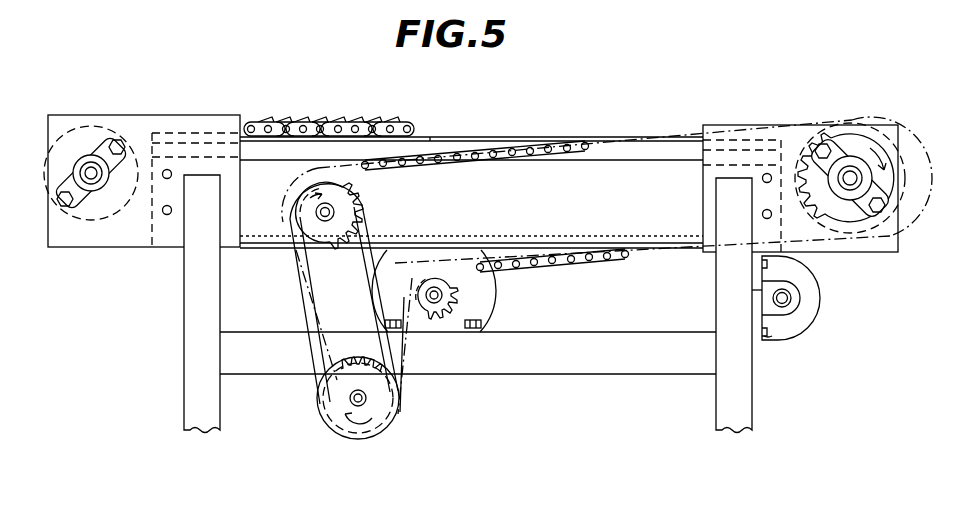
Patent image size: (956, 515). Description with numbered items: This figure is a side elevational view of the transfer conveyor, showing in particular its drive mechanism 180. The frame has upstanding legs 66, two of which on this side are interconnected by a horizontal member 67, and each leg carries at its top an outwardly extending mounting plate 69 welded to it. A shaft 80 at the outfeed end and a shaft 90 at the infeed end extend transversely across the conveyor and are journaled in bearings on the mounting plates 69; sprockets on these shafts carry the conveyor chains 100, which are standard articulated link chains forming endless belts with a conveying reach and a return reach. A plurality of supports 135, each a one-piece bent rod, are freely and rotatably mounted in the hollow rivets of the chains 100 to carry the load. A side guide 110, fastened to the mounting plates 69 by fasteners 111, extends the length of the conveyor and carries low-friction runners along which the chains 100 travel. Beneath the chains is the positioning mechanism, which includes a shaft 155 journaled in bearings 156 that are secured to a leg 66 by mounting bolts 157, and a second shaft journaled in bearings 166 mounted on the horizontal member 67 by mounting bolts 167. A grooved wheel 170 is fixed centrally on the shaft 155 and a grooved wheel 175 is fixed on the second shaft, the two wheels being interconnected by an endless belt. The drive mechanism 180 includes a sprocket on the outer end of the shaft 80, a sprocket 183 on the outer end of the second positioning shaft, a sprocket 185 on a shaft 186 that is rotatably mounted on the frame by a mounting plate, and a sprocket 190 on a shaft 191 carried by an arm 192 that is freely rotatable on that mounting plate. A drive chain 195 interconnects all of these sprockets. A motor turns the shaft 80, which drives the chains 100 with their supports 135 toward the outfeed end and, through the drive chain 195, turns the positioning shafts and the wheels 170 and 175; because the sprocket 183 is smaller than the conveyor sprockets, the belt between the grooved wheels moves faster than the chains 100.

The legs 66 is at (184, 362).
The horizontal members 67 is at (556, 366).
The mounting plate 69 is at (215, 115).
The shaft 80 is at (852, 172).
The shaft 90 is at (91, 168).
The chains 100 is at (410, 124).
The side guide 110 is at (536, 203).
The fasteners 111 is at (171, 177).
The supports 135 is at (295, 117).
The shaft 155 is at (790, 301).
The bearings 156 is at (752, 290).
The mounting bolts 157 is at (770, 337).
The bearings 166 is at (453, 330).
The mounting bolts 167 is at (470, 311).
The grooved wheel 170 is at (806, 288).
The grooved wheel 175 is at (493, 329).
The drive mechanism 180 is at (684, 126).
The sprocket 183 is at (457, 272).
The sprocket 185 is at (356, 201).
The shaft 186 is at (340, 212).
The sprocket 190 is at (336, 405).
The shaft 191 is at (366, 403).
The arm 192 is at (330, 283).
The drive chain 195 is at (540, 146).